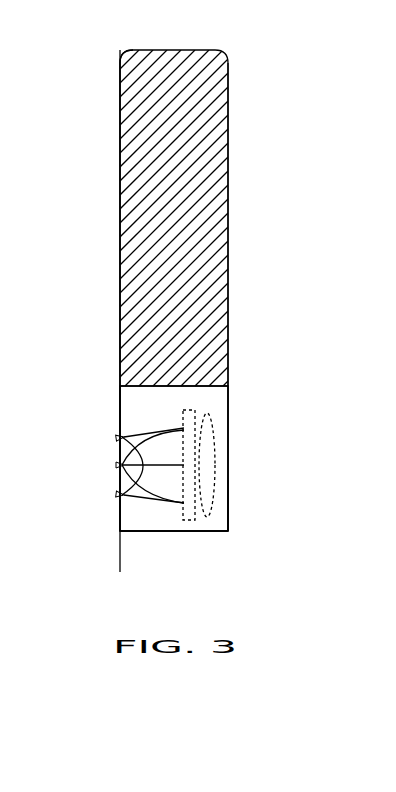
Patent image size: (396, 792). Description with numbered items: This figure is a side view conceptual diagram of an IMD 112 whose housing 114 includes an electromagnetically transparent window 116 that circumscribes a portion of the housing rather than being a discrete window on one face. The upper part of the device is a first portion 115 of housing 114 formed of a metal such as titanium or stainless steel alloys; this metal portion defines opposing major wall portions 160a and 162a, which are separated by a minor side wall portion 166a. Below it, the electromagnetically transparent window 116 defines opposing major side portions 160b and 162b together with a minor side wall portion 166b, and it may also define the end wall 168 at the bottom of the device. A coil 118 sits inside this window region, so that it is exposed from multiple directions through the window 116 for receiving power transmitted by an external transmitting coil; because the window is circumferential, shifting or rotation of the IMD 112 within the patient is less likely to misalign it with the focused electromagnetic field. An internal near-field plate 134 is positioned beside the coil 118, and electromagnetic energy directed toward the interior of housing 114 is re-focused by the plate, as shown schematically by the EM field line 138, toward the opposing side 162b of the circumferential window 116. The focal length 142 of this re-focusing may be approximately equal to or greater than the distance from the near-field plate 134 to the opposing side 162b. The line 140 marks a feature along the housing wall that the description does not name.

The IMD 112 is at (182, 50).
The housing 114 is at (118, 140).
The first portion of housing 115 is at (228, 215).
The electromagnetically transparent window 116 is at (228, 508).
The coil 118 is at (215, 457).
The internal near-field plate 134 is at (189, 521).
The EM field line 138 is at (127, 449).
The wall 140 is at (118, 542).
The focal length 142 is at (120, 488).
The major wall portion 160a is at (228, 347).
The major side portion 160b is at (228, 495).
The major wall portion 162a is at (120, 303).
The major side portion 162b is at (120, 430).
The minor side wall portion 166a is at (209, 132).
The minor side wall portion 166b is at (218, 400).
The end wall 168 is at (130, 533).